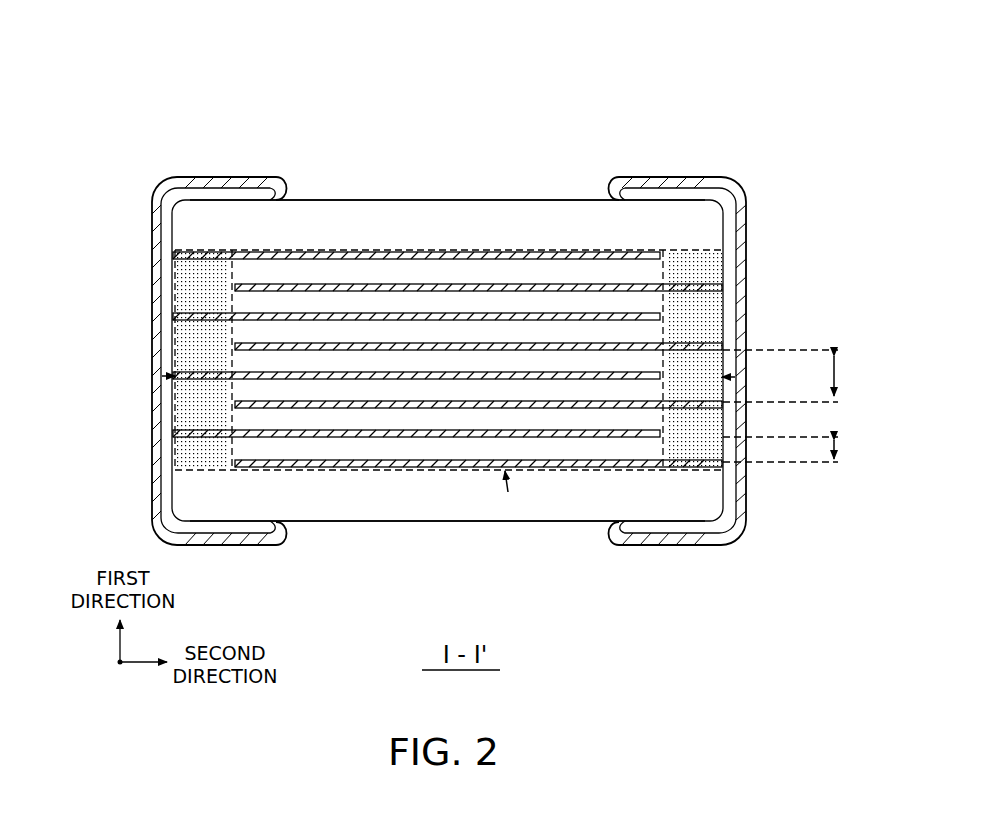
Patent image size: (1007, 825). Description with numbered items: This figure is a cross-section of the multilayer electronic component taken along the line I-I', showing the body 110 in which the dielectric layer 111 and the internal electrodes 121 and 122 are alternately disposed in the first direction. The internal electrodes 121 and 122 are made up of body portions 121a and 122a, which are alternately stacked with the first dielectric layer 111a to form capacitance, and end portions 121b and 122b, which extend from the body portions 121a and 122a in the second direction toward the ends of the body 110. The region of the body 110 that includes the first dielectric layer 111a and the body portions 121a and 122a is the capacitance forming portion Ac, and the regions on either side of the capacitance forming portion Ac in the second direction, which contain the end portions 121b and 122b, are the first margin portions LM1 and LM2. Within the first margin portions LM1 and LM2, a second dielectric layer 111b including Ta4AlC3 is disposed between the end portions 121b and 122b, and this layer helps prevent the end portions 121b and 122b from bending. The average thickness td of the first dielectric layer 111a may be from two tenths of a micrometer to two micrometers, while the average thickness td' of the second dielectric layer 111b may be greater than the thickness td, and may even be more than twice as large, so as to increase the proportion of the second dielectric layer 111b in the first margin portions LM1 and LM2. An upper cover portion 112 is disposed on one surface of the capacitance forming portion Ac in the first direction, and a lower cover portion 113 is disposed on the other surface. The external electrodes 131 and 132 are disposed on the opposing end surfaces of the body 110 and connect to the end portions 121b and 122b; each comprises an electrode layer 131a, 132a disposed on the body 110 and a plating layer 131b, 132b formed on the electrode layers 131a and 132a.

The body 110 is at (457, 200).
The dielectric layer 111 is at (448, 281).
The first dielectric layer 111a is at (310, 277).
The second dielectric layer 111b is at (213, 268).
The upper cover portion 112 is at (513, 212).
The lower cover portion 113 is at (418, 512).
The first internal electrode 121 is at (412, 238).
The body portion of first internal electrode 121a is at (340, 258).
The end portion of first internal electrode 121b is at (192, 258).
The second internal electrode 122 is at (497, 266).
The body portion of second internal electrode 122a is at (618, 282).
The end portion of second internal electrode 122b is at (682, 287).
The first external electrode 131 is at (158, 361).
The first electrode layer 131a is at (157, 293).
The first plating layer 131b is at (155, 322).
The second external electrode 132 is at (742, 361).
The second electrode layer 132a is at (742, 293).
The second plating layer 132b is at (745, 320).
The first margin portion LM1 is at (163, 376).
The first margin portion LM2 is at (734, 377).
The average thickness of second dielectric layer td' is at (793, 376).
The average thickness of first dielectric layer td is at (792, 449).
The capacitance forming portion Ac is at (508, 492).